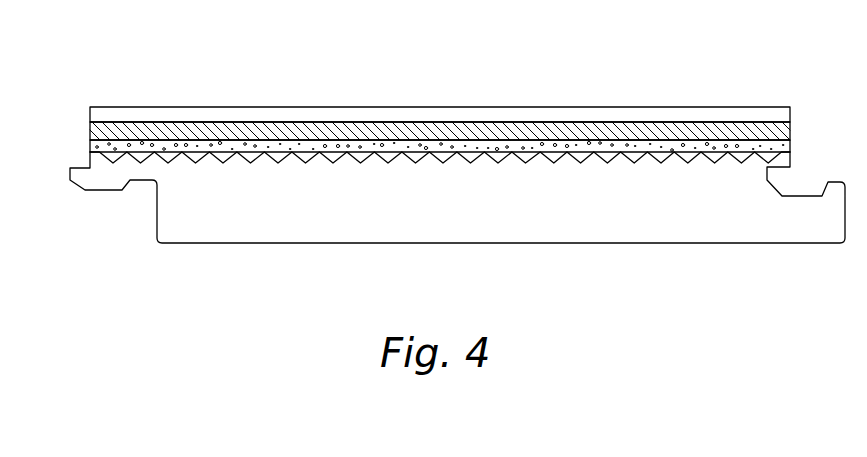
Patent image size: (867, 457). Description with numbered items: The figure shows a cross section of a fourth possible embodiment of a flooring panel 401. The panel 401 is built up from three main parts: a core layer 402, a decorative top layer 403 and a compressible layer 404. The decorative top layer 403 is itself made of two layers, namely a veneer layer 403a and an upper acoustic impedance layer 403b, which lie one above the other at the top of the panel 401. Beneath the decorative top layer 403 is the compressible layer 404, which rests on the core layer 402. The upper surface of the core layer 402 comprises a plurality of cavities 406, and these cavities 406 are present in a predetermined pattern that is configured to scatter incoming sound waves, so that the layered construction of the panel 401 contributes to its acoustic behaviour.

The flooring panel 401 is at (90, 85).
The core layer 402 is at (487, 192).
The decorative top layer 403 is at (88, 140).
The veneer layer 403a is at (333, 113).
The upper acoustic impedance layer 403b is at (432, 128).
The compressible layer 404 is at (527, 145).
The cavities 406 is at (222, 163).